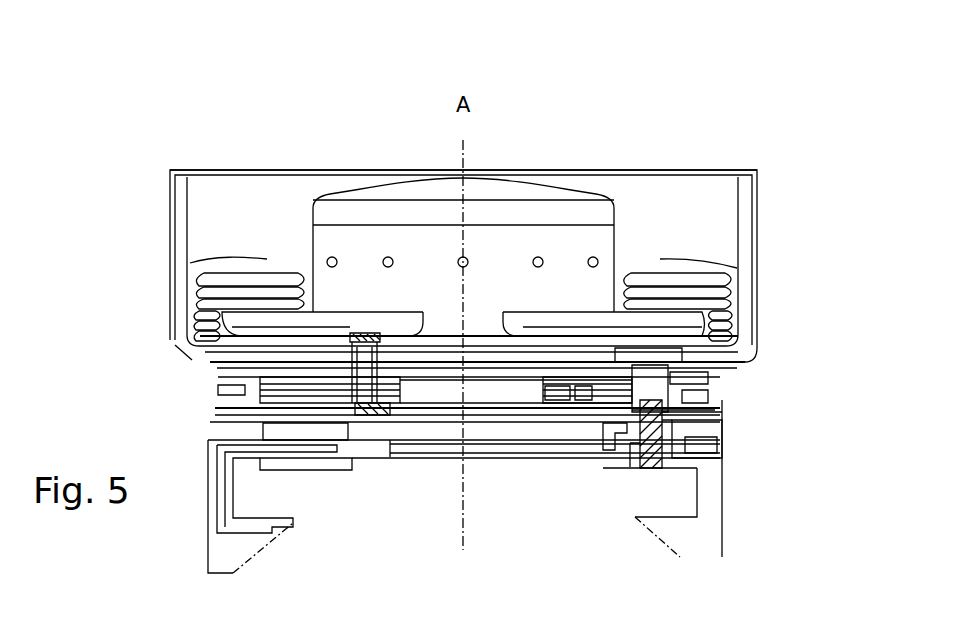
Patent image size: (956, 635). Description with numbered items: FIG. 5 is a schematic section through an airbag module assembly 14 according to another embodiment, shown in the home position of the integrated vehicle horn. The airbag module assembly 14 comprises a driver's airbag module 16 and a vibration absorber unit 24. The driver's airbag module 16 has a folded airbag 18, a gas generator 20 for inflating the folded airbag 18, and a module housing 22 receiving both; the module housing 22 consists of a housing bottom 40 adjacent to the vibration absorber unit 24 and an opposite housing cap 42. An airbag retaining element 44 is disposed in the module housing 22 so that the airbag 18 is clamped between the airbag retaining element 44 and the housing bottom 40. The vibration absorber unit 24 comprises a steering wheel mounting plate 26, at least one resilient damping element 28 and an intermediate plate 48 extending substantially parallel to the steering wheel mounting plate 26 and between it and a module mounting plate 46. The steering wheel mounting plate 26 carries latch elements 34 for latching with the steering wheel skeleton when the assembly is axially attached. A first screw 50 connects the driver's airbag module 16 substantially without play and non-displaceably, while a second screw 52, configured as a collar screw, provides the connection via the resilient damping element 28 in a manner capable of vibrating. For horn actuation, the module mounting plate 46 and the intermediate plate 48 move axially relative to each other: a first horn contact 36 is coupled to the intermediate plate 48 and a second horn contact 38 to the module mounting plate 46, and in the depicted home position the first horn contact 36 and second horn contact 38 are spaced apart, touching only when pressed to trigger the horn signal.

The airbag module assembly 14 is at (222, 96).
The driver's airbag module 16 is at (143, 328).
The folded airbag 18 is at (194, 257).
The gas generator 20 is at (413, 210).
The module housing 22 is at (160, 220).
The vibration absorber unit 24 is at (752, 486).
The steering wheel mounting plate 26 is at (428, 450).
The resilient damping element 28 is at (688, 426).
The latch element 34 is at (208, 522).
The first horn contact 36 is at (708, 379).
The second horn contact 38 is at (708, 398).
The housing bottom 40 is at (210, 362).
The housing cap 42 is at (595, 168).
The airbag retaining element 44 is at (703, 321).
The module mounting plate 46 is at (212, 366).
The intermediate plate 48 is at (213, 408).
The first screw 50 is at (363, 367).
The second screw 52 is at (643, 468).